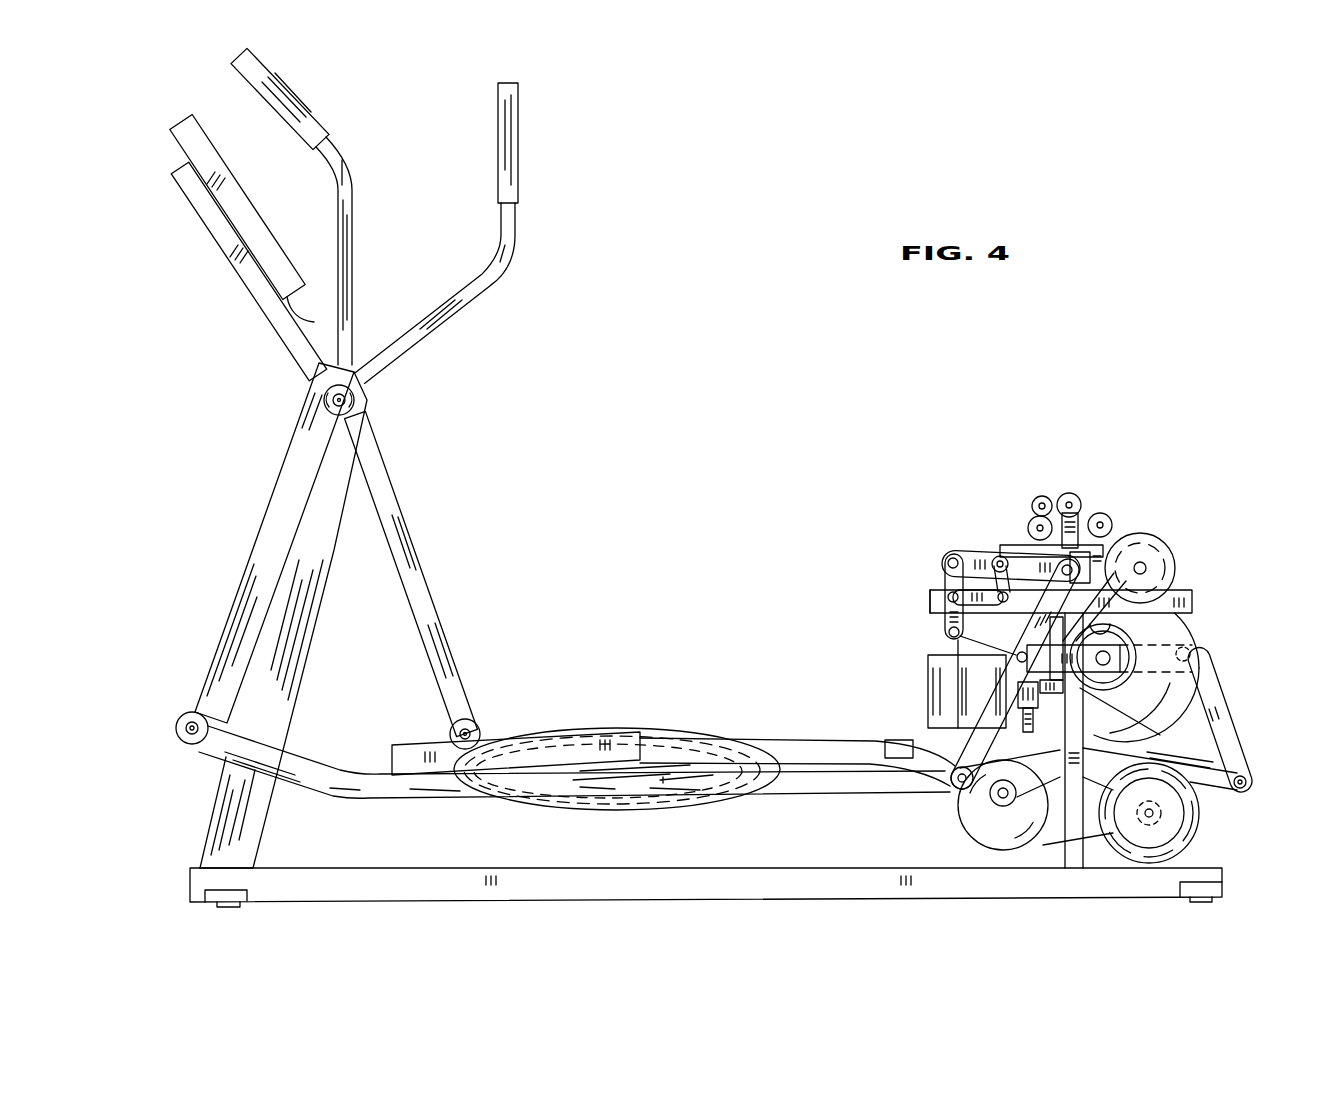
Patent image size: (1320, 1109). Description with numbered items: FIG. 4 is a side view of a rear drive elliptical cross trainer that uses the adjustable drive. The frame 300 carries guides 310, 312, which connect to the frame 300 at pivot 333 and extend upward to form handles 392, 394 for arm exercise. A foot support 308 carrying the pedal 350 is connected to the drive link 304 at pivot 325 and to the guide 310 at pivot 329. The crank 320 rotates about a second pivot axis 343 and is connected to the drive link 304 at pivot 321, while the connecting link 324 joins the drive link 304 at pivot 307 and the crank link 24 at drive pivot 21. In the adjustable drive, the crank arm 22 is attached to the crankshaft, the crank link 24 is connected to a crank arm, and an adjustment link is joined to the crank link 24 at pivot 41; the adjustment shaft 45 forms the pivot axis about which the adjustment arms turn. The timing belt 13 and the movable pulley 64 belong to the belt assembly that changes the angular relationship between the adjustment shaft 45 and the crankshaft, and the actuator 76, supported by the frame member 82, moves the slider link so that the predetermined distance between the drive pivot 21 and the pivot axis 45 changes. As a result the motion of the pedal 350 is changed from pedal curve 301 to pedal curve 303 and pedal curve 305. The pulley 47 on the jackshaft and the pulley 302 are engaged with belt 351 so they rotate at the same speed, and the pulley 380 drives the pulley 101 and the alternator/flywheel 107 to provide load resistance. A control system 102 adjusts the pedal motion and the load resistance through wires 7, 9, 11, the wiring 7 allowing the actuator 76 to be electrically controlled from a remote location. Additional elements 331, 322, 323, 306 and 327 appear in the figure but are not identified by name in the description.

The handle 392 is at (303, 102).
The control system 102 is at (247, 200).
The wire 9 is at (310, 310).
The handle 394 is at (513, 220).
The pivot 333 is at (347, 404).
The guide 310 is at (268, 533).
The guide 312 is at (410, 550).
The pivot 331 is at (470, 722).
The pedal 350 is at (434, 742).
The pedal curve 301 is at (508, 758).
The foot support 308 is at (293, 755).
The pedal curve 303 is at (750, 730).
The pedal curve 305 is at (748, 747).
The pivot 329 is at (200, 746).
The frame 300 is at (527, 866).
The connecting link 324 is at (933, 548).
The crank arm 22 is at (1012, 517).
The movable pulley 64 is at (1069, 492).
The pivot 307 is at (1078, 548).
The drive pivot 21 is at (992, 560).
The adjustment shaft 45 is at (996, 550).
The timing belt 13 is at (1030, 550).
The pulley 47 is at (1113, 578).
The frame member 82 is at (1165, 545).
The crank link 24 is at (942, 580).
The pivot 41 is at (947, 597).
The belt 351 is at (1160, 622).
The pulley 302 is at (1192, 600).
The second pivot axis 343 is at (1120, 633).
The crank disk 322 is at (1167, 645).
The crank pin 323 is at (1197, 653).
The pulley 380 is at (1180, 683).
The connecting rod 306 is at (1220, 713).
The alternator/flywheel 107 is at (1083, 777).
The pivot 321 is at (1014, 657).
The actuator 76 is at (928, 668).
The drive link 304 is at (980, 713).
The wiring 7 is at (940, 740).
The crank 320 is at (1148, 727).
The pivot 325 is at (957, 783).
The pulley 101 is at (957, 813).
The pivot 327 is at (1240, 793).
The wire 11 is at (1187, 817).